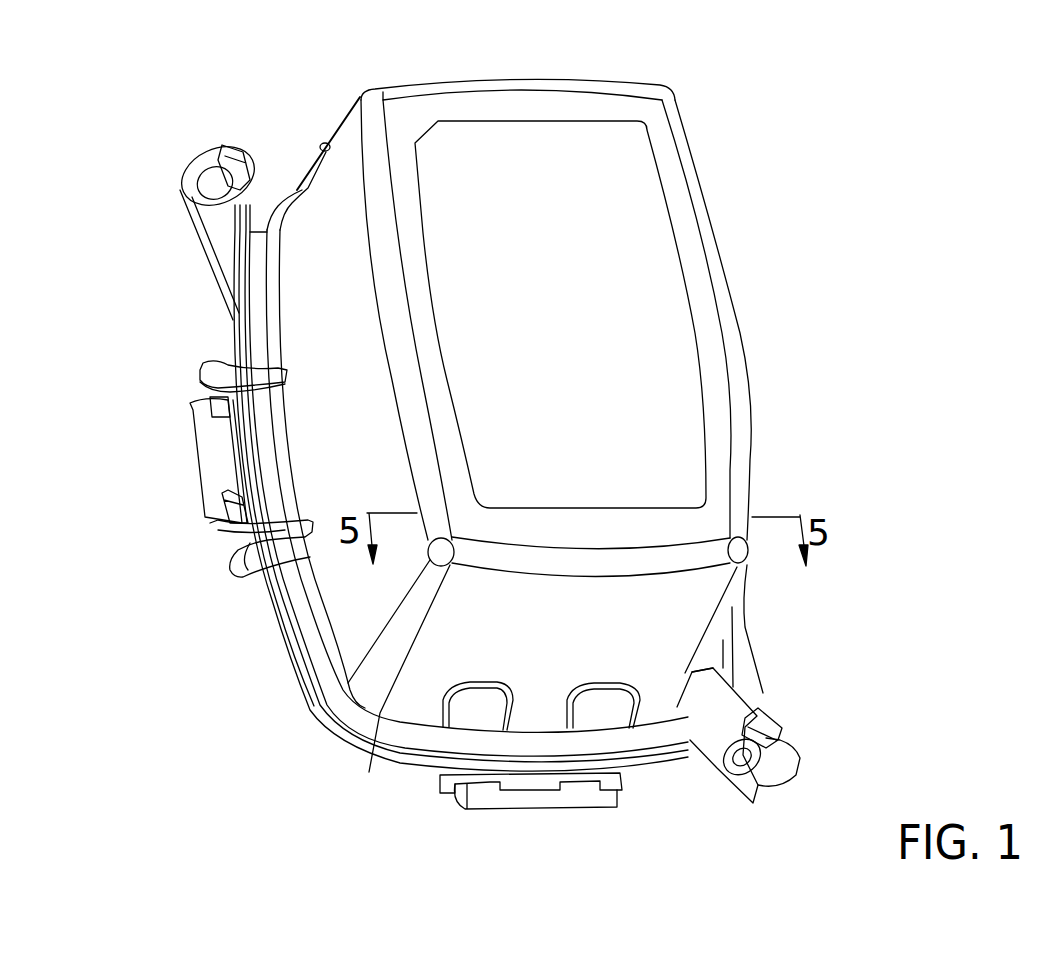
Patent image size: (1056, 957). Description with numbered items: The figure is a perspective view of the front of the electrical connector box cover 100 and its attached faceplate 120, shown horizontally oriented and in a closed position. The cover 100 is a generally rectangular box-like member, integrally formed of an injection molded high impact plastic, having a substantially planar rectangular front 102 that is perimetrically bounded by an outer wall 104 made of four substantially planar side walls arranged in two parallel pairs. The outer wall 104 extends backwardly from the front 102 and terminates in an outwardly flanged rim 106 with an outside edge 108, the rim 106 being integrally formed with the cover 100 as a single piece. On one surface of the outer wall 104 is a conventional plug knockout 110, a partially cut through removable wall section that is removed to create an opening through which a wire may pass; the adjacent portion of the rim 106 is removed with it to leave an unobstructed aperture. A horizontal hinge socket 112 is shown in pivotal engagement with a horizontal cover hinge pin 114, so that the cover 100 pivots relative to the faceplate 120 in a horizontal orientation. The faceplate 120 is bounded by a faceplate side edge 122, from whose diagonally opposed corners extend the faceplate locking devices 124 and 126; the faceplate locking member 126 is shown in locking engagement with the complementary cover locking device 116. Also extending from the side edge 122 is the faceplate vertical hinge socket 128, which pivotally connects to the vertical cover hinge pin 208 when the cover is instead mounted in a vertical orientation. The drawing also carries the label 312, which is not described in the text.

The electrical connector box cover 100 is at (757, 175).
The front 102 is at (650, 400).
The outer wall 104 is at (353, 173).
The outwardly flanged rim 106 is at (337, 710).
The outside edge 108 is at (348, 747).
The plug knockout 110 is at (470, 710).
The horizontal hinge socket 112 is at (208, 455).
The horizontal cover hinge pin 114 is at (210, 520).
The cover locking device 116 is at (747, 793).
The faceplate 120 is at (257, 662).
The faceplate side edge 122 is at (655, 763).
The faceplate locking device 124 is at (181, 175).
The faceplate locking member 126 is at (797, 745).
The faceplate vertical hinge socket 128 is at (527, 790).
The vertical cover hinge pin 208 is at (325, 143).
The hinge pin 312 is at (232, 143).